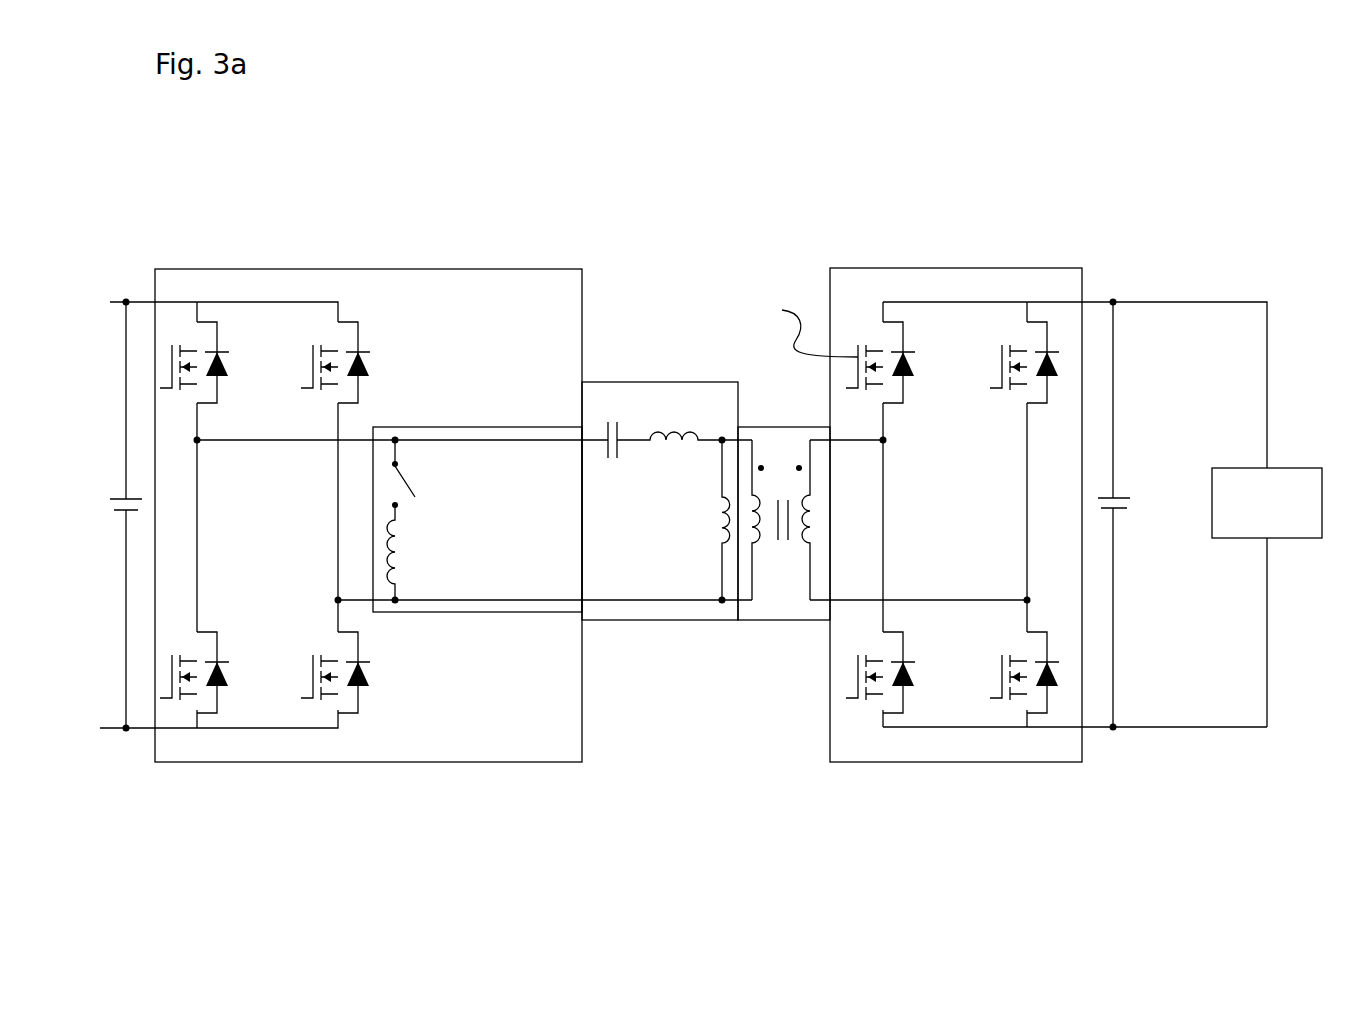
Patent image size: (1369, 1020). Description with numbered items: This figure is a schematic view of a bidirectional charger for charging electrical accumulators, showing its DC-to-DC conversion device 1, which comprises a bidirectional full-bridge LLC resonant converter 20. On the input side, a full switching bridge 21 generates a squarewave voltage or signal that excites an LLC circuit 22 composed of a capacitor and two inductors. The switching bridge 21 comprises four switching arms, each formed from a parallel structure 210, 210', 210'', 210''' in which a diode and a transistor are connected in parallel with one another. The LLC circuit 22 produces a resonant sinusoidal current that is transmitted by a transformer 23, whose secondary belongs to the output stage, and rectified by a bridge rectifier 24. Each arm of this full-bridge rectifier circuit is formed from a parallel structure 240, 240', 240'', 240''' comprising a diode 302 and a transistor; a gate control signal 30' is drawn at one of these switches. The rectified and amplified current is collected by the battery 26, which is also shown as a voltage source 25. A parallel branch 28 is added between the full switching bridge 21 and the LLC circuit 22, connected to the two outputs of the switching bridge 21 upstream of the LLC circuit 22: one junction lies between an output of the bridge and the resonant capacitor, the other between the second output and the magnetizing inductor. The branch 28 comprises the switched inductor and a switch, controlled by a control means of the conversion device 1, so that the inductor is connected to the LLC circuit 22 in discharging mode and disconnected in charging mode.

The DC-to-DC conversion device 1 is at (705, 168).
The bidirectional full-bridge LLC resonant converter 20 is at (854, 208).
The full switching bridge 21 is at (168, 583).
The LLC circuit 22 is at (662, 575).
The transformer 23 is at (785, 590).
The bridge rectifier 24 is at (978, 325).
The voltage source 25 is at (1120, 496).
The battery 26 is at (1305, 478).
The parallel branch 28 is at (405, 585).
The gate control signal 30' is at (799, 326).
The parallel structure 210 is at (194, 305).
The parallel structure 210' is at (335, 305).
The parallel structure 210'' is at (357, 725).
The parallel structure 210''' is at (217, 725).
The parallel structure 240 is at (905, 394).
The parallel structure 240' is at (1070, 316).
The parallel structure 240'' is at (1043, 725).
The parallel structure 240''' is at (906, 725).
The diode 302 is at (935, 345).